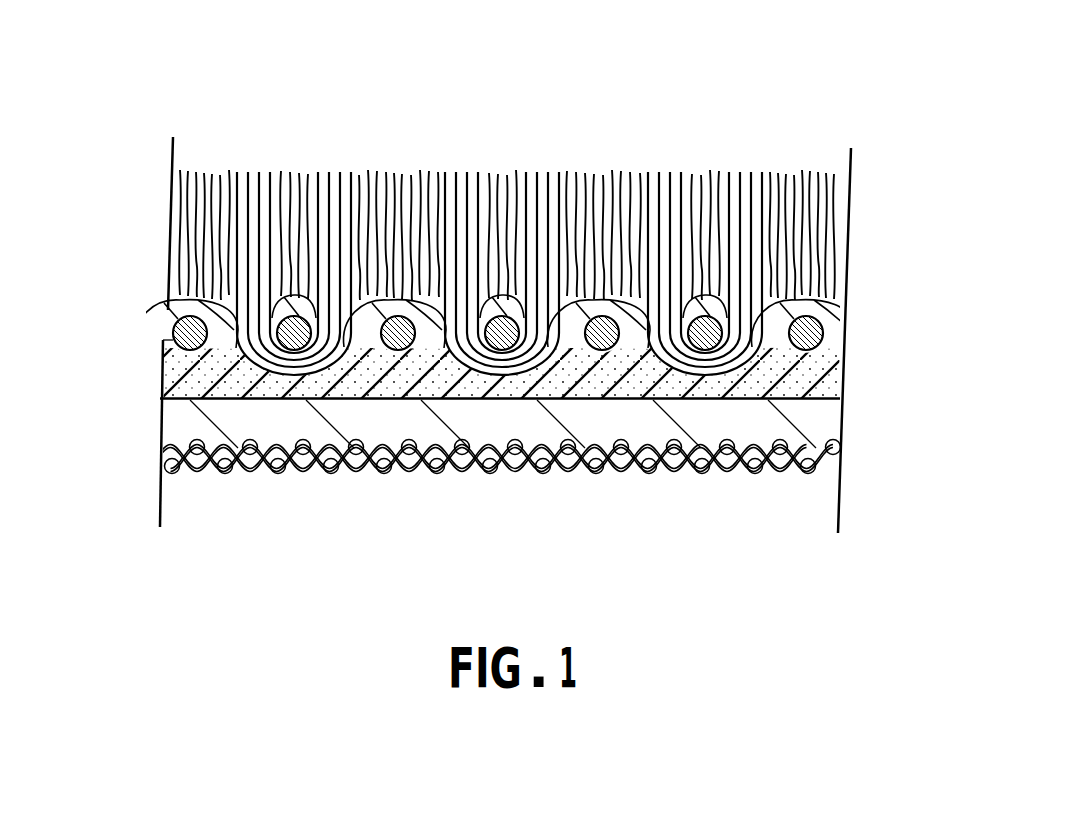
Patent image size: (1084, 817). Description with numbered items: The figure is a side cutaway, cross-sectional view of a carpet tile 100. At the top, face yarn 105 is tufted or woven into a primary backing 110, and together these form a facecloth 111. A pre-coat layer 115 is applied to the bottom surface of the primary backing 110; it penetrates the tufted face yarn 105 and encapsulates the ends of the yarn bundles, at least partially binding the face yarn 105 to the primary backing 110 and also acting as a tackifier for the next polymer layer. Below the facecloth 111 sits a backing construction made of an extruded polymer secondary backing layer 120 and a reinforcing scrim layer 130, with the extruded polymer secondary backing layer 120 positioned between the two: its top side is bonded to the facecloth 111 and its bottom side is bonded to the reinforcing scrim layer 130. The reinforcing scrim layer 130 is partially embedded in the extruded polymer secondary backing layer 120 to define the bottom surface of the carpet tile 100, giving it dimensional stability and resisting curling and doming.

The carpet tile 100 is at (578, 128).
The face yarn 105 is at (815, 232).
The primary backing 110 is at (833, 311).
The facecloth 111 is at (163, 172).
The pre-coat layer 115 is at (160, 378).
The extruded polymer secondary backing layer 120 is at (817, 418).
The reinforcing scrim layer 130 is at (663, 470).